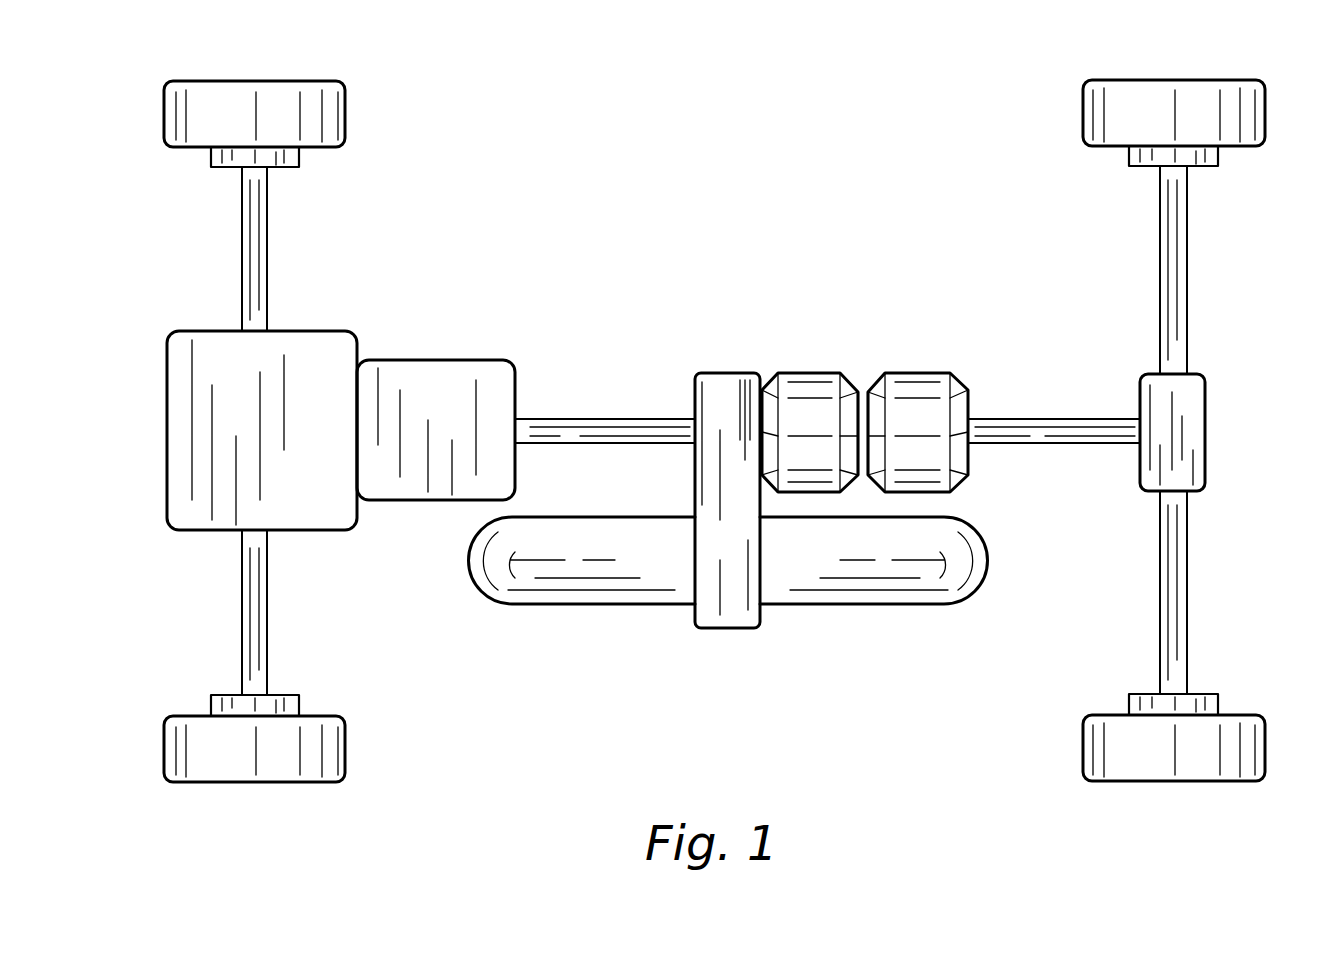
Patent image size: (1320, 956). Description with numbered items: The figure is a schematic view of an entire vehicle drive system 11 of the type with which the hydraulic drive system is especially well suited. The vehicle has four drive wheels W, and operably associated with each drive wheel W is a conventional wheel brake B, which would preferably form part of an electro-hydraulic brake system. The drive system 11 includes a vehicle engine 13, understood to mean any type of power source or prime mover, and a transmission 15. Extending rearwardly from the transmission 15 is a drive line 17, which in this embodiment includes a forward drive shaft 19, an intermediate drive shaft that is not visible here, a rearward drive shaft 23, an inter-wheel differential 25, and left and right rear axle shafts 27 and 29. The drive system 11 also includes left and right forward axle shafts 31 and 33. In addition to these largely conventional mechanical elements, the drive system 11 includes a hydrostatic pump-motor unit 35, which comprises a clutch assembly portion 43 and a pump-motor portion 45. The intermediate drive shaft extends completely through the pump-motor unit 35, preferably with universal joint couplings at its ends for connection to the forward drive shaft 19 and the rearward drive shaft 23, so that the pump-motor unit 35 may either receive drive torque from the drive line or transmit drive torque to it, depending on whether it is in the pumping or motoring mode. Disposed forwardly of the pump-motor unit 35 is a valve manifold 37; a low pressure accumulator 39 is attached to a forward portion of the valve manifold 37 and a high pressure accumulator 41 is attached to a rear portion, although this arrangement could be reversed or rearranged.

The vehicle drive system 11 is at (724, 322).
The vehicle engine 13 is at (242, 406).
The transmission 15 is at (437, 385).
The drive line 17 is at (645, 402).
The forward drive shaft 19 is at (600, 437).
The rearward drive shaft 23 is at (1052, 432).
The inter-wheel differential 25 is at (1192, 427).
The left rear axle shaft 27 is at (1180, 600).
The right rear axle shaft 29 is at (1180, 270).
The left forward axle shaft 31 is at (253, 603).
The right forward axle shaft 33 is at (258, 261).
The hydrostatic pump-motor unit 35 is at (874, 348).
The valve manifold 37 is at (736, 607).
The low pressure accumulator 39 is at (572, 597).
The high pressure accumulator 41 is at (873, 597).
The clutch assembly portion 43 is at (808, 386).
The pump-motor portion 45 is at (853, 350).
The drive wheel W is at (332, 113).
The wheel brake B is at (294, 160).